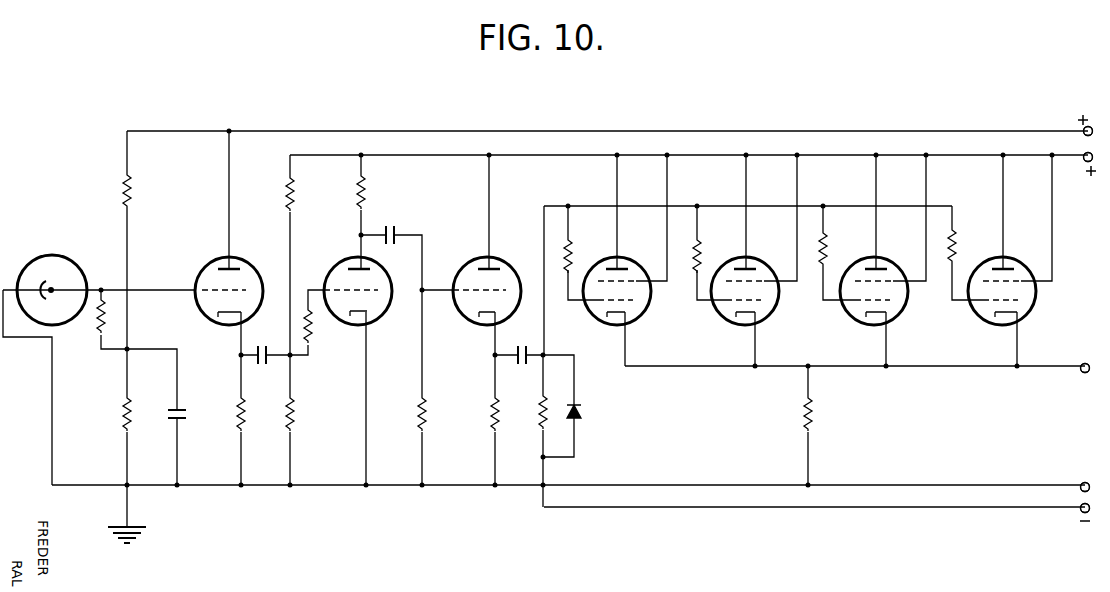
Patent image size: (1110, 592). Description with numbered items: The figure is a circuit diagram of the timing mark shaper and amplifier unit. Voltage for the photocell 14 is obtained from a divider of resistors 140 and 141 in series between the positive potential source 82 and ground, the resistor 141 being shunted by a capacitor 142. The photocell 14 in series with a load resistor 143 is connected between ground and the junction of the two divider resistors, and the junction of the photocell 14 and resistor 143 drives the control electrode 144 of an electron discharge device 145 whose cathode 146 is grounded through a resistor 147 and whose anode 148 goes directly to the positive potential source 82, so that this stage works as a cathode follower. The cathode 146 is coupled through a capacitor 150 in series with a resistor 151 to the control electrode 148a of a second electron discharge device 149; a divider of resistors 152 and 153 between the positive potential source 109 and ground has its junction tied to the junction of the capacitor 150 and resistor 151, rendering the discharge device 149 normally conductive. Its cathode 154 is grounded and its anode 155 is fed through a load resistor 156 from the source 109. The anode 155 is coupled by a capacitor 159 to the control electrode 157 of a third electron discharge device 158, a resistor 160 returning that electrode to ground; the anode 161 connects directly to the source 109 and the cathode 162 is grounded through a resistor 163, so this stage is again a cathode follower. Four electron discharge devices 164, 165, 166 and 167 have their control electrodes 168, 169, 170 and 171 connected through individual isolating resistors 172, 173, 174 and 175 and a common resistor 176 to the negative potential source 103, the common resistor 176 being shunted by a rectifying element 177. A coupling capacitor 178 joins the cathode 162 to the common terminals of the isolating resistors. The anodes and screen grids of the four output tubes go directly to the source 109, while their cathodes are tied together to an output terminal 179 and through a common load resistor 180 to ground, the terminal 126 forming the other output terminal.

The photocell 14 is at (49, 265).
The positive potential source 82 is at (1082, 126).
The negative potential source 103 is at (1078, 513).
The positive potential source 109 is at (1083, 163).
The output terminal 126 is at (1078, 481).
The resistor 140 is at (132, 190).
The resistor 141 is at (121, 416).
The capacitor 142 is at (172, 409).
The load resistor 143 is at (96, 330).
The control electrode 144 is at (209, 288).
The electron discharge device 145 is at (199, 305).
The cathode 146 is at (218, 313).
The resistor 147 is at (236, 418).
The anode 148 is at (218, 265).
The control electrode 148a is at (343, 288).
The electron discharge device 149 is at (378, 310).
The capacitor 150 is at (271, 340).
The resistor 151 is at (312, 338).
The resistor 152 is at (286, 195).
The resistor 153 is at (296, 420).
The cathode 154 is at (355, 312).
The anode 155 is at (362, 265).
The load resistor 156 is at (366, 195).
The control electrode 157 is at (472, 286).
The electron discharge device 158 is at (482, 314).
The capacitor 159 is at (394, 231).
The resistor 160 is at (416, 420).
The anode 161 is at (505, 267).
The cathode 162 is at (485, 333).
The resistor 163 is at (489, 418).
The electron discharge device 164 is at (639, 315).
The electron discharge device 165 is at (767, 315).
The electron discharge device 166 is at (894, 313).
The electron discharge device 167 is at (1024, 313).
The control electrode 168 is at (597, 302).
The control electrode 169 is at (727, 302).
The control electrode 170 is at (857, 302).
The control electrode 171 is at (987, 302).
The isolating resistor 172 is at (572, 258).
The isolating resistor 173 is at (701, 258).
The isolating resistor 174 is at (828, 252).
The isolating resistor 175 is at (957, 252).
The common resistor 176 is at (538, 426).
The rectifying element 177 is at (578, 410).
The coupling capacitor 178 is at (520, 347).
The output terminal 179 is at (1078, 376).
The common load resistor 180 is at (816, 425).